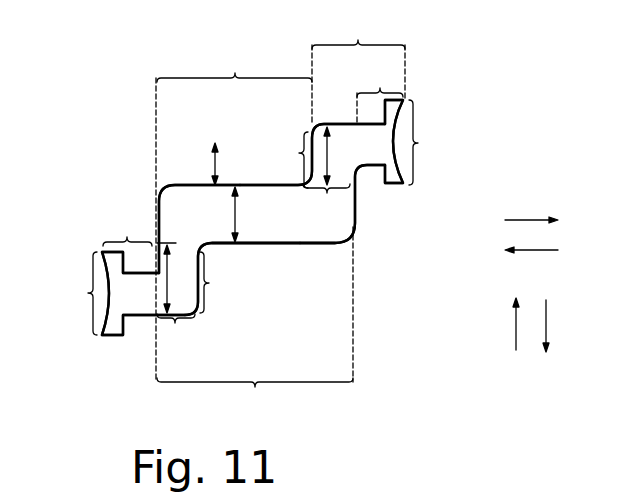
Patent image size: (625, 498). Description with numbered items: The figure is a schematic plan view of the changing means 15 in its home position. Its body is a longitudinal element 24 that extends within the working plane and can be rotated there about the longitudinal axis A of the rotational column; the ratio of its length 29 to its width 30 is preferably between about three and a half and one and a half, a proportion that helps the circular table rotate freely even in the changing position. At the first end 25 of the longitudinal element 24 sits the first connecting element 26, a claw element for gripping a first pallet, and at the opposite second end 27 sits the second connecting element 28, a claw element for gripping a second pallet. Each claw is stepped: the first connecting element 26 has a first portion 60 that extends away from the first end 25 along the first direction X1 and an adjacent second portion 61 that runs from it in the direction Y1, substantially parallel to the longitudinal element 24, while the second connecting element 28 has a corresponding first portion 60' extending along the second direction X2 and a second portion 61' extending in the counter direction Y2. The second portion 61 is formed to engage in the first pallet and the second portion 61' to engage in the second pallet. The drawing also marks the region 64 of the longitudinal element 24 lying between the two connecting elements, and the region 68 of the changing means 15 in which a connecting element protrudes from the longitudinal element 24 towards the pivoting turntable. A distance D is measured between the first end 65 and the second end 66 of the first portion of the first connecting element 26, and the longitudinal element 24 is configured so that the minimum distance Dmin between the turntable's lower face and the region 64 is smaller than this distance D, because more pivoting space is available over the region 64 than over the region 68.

The changing means 15 is at (98, 100).
The longitudinal element 24 is at (275, 230).
The first end 25 is at (157, 215).
The first connecting element 26 is at (76, 355).
The second end 27 is at (357, 200).
The second connecting element 28 is at (418, 90).
The length 29 is at (255, 322).
The width 30 is at (220, 207).
The first portion 60 is at (199, 300).
The first portion 60' is at (309, 175).
The second portion 61 is at (104, 275).
The second portion 61' is at (407, 123).
The region 64 is at (234, 213).
The first end 65 is at (185, 238).
The second end 66 is at (155, 317).
The region 68 is at (358, 55).
The distance D is at (165, 282).
The minimum distance Dmin is at (214, 147).
The longitudinal axis A is at (256, 208).
The first direction X1 is at (514, 330).
The second direction X2 is at (543, 335).
The first direction Y1 is at (528, 250).
The second direction Y2 is at (517, 218).